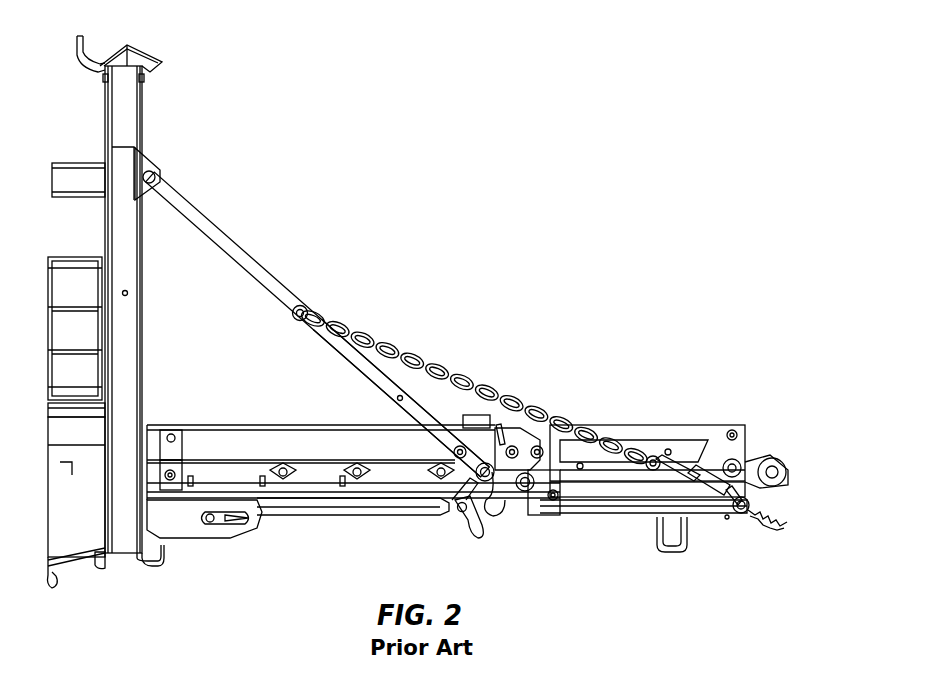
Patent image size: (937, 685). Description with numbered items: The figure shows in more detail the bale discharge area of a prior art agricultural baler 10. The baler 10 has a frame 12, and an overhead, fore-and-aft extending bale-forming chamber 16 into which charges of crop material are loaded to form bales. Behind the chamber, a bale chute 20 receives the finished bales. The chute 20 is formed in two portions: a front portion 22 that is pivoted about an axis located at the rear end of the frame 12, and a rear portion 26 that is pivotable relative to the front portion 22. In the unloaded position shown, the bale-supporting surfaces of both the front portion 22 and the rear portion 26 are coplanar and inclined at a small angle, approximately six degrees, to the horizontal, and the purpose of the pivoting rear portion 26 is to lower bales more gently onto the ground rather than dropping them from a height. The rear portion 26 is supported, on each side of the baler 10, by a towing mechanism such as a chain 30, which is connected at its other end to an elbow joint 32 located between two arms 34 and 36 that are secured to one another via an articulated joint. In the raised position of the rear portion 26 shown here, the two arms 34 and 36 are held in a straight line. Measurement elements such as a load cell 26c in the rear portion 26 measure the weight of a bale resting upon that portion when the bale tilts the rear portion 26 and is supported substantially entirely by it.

The agricultural baler 10 is at (160, 128).
The frame 12 is at (75, 540).
The bale-forming chamber 16 is at (88, 327).
The chute 20 is at (521, 251).
The front portion 22 is at (262, 410).
The rear portion 26 is at (672, 407).
The load cell 26c is at (648, 490).
The chain 30 is at (440, 367).
The elbow joint 32 is at (303, 308).
The arm 34 is at (213, 223).
The arm 36 is at (345, 358).